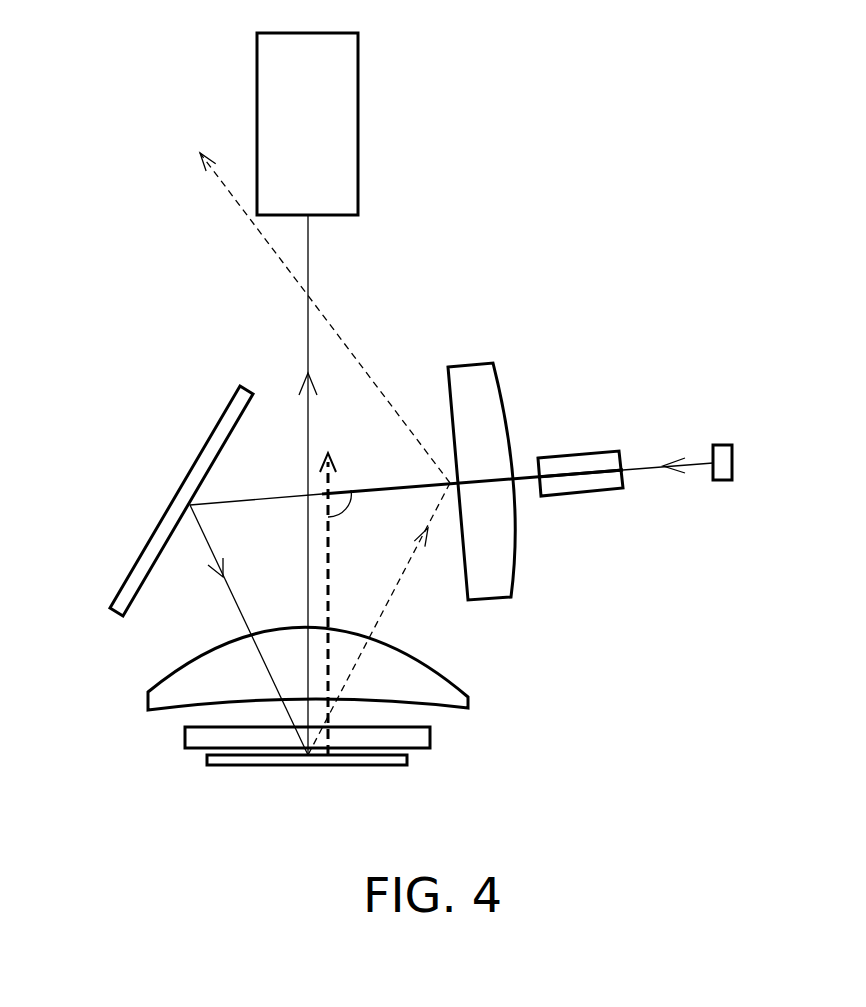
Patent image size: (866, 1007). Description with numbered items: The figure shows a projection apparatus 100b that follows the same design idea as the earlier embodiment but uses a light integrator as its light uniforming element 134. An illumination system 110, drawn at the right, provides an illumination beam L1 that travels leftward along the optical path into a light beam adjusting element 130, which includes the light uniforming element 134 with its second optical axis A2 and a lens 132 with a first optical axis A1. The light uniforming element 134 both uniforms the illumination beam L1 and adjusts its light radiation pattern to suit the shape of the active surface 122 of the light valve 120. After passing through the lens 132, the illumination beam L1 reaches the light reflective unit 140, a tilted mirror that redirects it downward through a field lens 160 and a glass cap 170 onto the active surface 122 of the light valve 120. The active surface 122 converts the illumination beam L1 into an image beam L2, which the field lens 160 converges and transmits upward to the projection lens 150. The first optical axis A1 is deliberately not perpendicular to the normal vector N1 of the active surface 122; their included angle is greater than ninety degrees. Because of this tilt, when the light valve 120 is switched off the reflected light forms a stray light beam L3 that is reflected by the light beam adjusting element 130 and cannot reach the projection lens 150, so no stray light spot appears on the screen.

The projection apparatus 100b is at (672, 712).
The illumination system 110 is at (720, 445).
The light valve 120 is at (220, 760).
The active surface 122 is at (150, 688).
The light beam adjusting element 130 is at (635, 255).
The lens 132 is at (470, 365).
The light uniforming element 134 is at (578, 456).
The light reflective unit 140 is at (215, 438).
The projection lens 150 is at (257, 128).
The field lens 160 is at (373, 692).
The glass cap 170 is at (418, 737).
The illumination beam L1 is at (653, 462).
The image beam L2 is at (308, 330).
The stray light beam L3 is at (407, 582).
The first optical axis A1 is at (382, 490).
The second optical axis A2 is at (535, 476).
The normal vector N1 is at (333, 606).